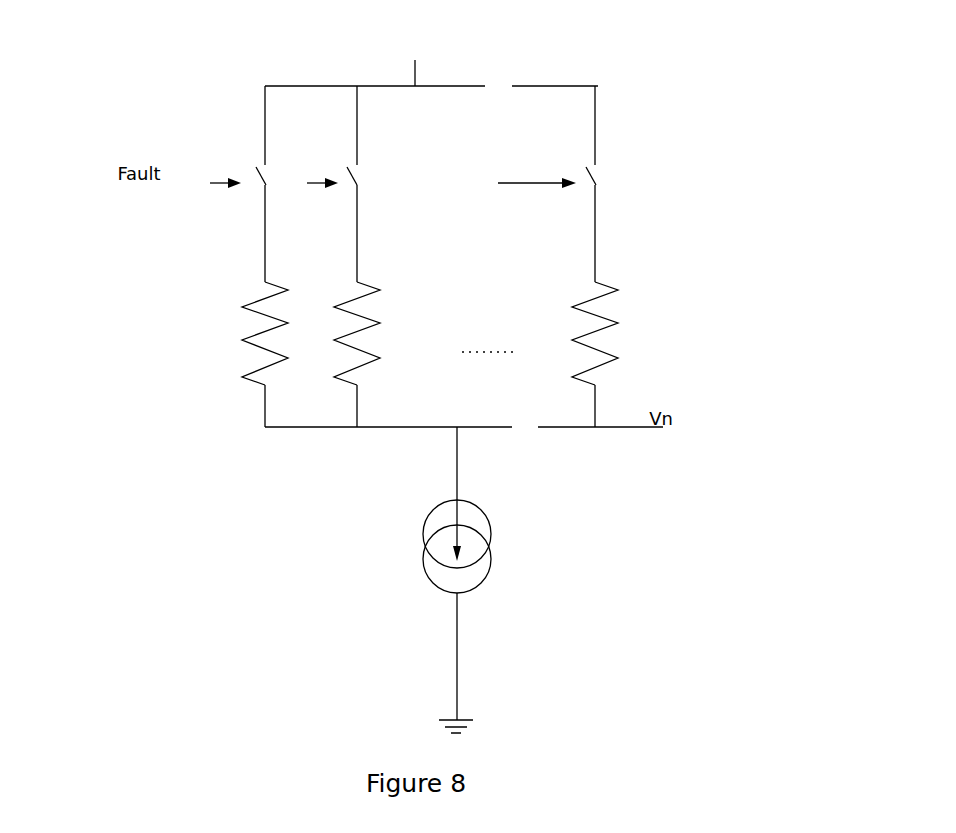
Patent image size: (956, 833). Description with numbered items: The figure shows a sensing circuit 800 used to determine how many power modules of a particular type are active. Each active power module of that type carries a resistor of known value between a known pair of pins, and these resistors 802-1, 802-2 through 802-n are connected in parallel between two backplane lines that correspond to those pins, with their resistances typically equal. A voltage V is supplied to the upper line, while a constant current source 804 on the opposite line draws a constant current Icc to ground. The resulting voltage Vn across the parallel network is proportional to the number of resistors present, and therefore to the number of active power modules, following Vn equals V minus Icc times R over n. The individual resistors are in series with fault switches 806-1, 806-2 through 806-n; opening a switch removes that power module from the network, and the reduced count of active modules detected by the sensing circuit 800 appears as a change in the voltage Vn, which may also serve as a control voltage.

The sensing circuit 800 is at (552, 120).
The resistor 802-1 is at (247, 325).
The resistor 802-2 is at (378, 322).
The resistor 802-n is at (610, 323).
The constant current source 804 is at (422, 551).
The fault switch 806-1 is at (265, 157).
The fault switch 806-2 is at (340, 146).
The fault switch 806-n is at (608, 175).